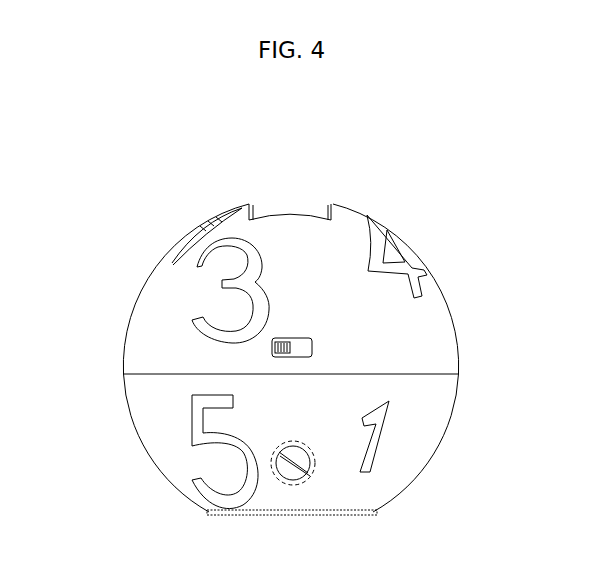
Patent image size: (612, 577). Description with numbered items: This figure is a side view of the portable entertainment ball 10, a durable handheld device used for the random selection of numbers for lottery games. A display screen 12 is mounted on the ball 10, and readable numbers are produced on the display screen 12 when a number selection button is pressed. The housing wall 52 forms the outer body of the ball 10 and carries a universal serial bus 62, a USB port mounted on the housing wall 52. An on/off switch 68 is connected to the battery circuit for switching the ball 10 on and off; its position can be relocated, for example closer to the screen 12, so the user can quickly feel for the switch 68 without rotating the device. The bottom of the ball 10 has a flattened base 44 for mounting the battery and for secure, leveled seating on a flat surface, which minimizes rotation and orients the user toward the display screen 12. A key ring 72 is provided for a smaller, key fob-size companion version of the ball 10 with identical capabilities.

The portable entertainment ball 10 is at (415, 238).
The display screen 12 is at (288, 216).
The flattened base 44 is at (327, 515).
The housing wall 52 is at (141, 290).
The universal serial bus 62 is at (457, 333).
The on/off switch 68 is at (296, 337).
The key ring 72 is at (295, 447).